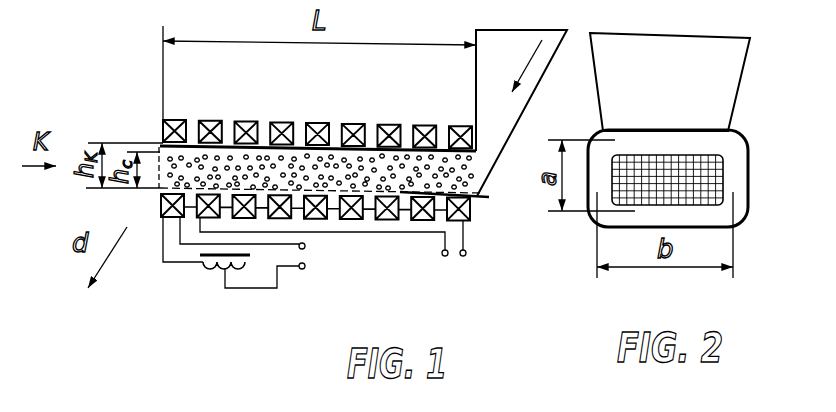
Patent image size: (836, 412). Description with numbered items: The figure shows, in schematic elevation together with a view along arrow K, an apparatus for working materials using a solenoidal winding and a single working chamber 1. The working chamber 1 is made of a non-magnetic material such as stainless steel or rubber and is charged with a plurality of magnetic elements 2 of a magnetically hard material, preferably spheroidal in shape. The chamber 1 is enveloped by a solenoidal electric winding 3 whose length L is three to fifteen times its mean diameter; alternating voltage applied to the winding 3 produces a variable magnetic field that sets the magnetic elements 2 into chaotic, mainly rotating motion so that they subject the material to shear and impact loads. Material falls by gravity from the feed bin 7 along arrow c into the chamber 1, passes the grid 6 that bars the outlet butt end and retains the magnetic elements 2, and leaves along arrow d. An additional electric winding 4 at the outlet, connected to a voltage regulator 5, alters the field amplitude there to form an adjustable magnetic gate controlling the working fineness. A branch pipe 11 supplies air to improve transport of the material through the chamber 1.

In FIG. 1, the working chamber 1 is at (230, 122).
In FIG. 2, the working chamber 1 is at (671, 147).
In FIG. 1, the magnetic elements 2 is at (303, 158).
In FIG. 1, the electric winding 3 is at (355, 123).
In FIG. 2, the electric winding 3 is at (733, 143).
In FIG. 1, the additional electric winding 4 is at (174, 120).
In FIG. 1, the voltage regulator 5 is at (206, 271).
In FIG. 1, the grid 6 is at (153, 158).
In FIG. 2, the grid 6 is at (722, 180).
In FIG. 1, the feed bin 7 is at (476, 95).
In FIG. 2, the feed bin 7 is at (591, 64).
In FIG. 1, the branch pipe 11 is at (486, 200).